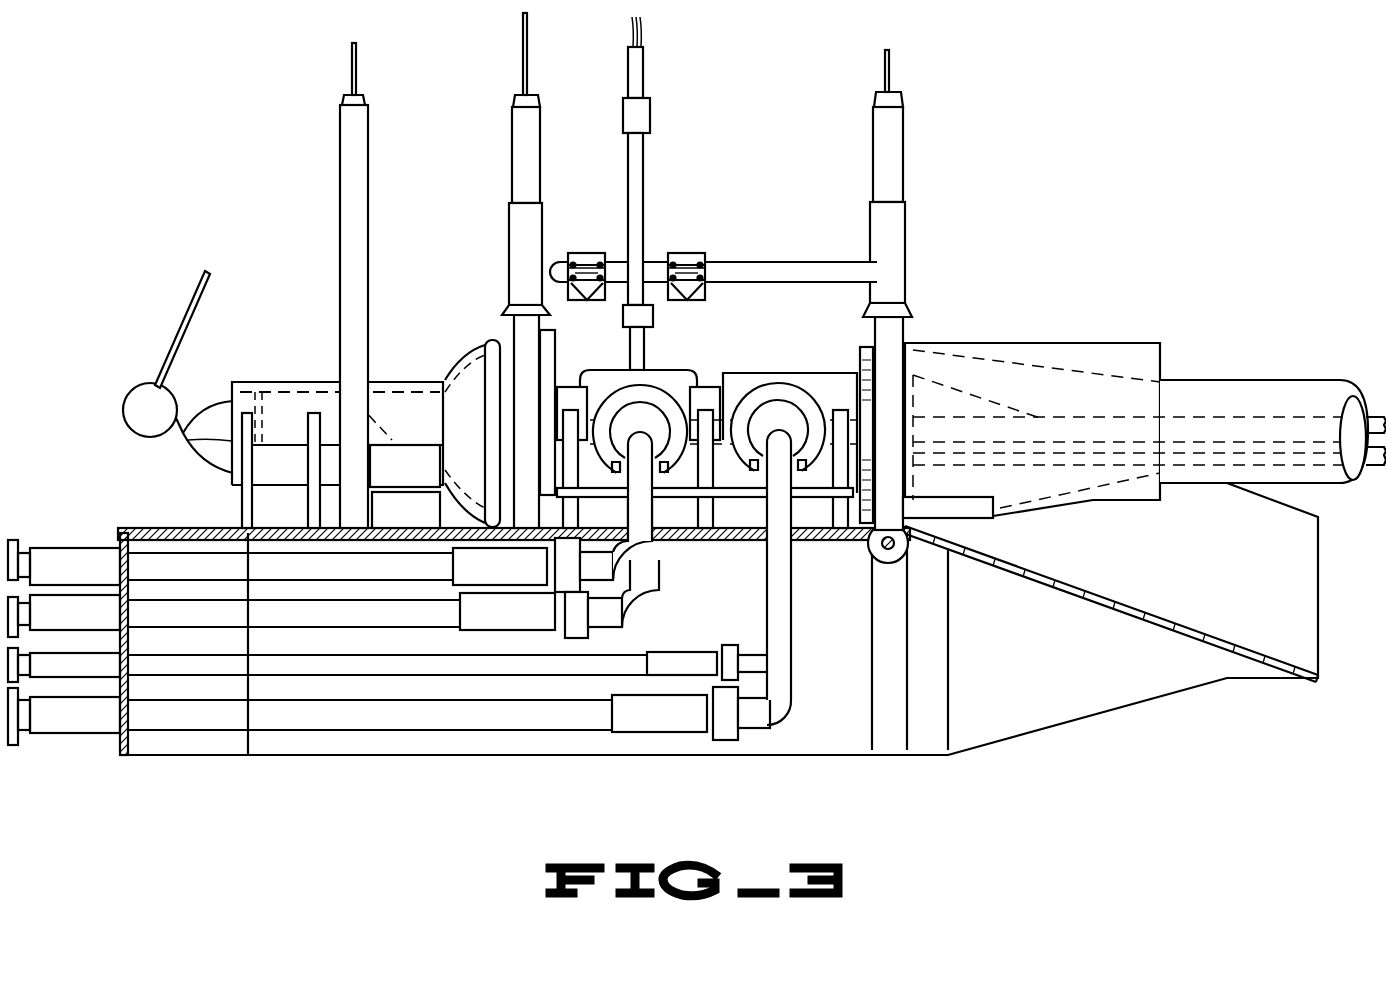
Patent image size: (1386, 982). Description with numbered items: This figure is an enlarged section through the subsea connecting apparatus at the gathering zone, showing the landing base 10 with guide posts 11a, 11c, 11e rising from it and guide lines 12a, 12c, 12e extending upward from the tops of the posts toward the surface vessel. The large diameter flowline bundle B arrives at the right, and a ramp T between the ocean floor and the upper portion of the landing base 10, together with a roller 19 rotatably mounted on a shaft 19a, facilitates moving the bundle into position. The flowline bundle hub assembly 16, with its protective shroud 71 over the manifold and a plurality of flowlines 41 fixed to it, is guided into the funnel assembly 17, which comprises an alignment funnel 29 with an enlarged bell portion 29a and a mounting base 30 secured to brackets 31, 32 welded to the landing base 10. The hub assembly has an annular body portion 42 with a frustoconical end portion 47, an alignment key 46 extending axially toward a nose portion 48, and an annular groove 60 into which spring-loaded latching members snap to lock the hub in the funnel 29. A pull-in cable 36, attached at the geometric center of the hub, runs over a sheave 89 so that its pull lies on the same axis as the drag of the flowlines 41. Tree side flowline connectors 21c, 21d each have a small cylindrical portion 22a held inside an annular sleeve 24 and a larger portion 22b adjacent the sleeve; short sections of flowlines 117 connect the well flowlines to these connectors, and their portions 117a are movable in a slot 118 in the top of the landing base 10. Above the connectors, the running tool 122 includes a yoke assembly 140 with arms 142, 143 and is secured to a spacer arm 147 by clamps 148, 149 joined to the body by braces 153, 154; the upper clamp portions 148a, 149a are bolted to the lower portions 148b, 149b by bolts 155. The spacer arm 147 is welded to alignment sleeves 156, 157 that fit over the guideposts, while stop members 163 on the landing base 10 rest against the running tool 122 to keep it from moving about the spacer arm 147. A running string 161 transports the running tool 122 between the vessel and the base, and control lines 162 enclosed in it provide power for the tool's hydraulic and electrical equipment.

The landing base 10 is at (118, 533).
The guide post 11a is at (342, 133).
The guide post 11c is at (514, 130).
The guide post 11e is at (893, 110).
The guide line 12a is at (352, 55).
The guide line 12c is at (523, 50).
The guide line 12e is at (893, 62).
The flowline bundle hub assembly 16 is at (203, 461).
The funnel assembly 17 is at (235, 499).
The roller 19 is at (886, 565).
The shaft 19a is at (880, 550).
The tree side flowline connector 21c is at (656, 378).
The tree side flowline connector 21d is at (741, 398).
The small cylindrical portion 22a is at (806, 432).
The larger portion 22b is at (797, 390).
The annular sleeve 24 is at (705, 469).
The alignment funnel 29 is at (246, 383).
The enlarged bell portion 29a is at (270, 400).
The mounting base 30 is at (412, 479).
The bracket 31 is at (248, 478).
The bracket 32 is at (436, 511).
The pull-in cable 36 is at (168, 330).
The flowlines 41 is at (1372, 426).
The annular body portion 42 is at (416, 380).
The alignment key 46 is at (285, 384).
The frustoconical end portion 47 is at (492, 348).
The nose portion 48 is at (188, 444).
The annular groove 60 is at (236, 405).
The protective shroud 71 is at (1077, 345).
The sheave 89 is at (133, 415).
The short sections of flowlines 117 is at (159, 575).
The portions adjacent the flowline connectors 117a is at (650, 578).
The slot 118 is at (762, 540).
The running tool 122 is at (727, 298).
The yoke assembly 140 is at (720, 308).
The arm 142 is at (580, 390).
The arm 143 is at (706, 388).
The spacer arm 147 is at (868, 275).
The clamp 148 is at (586, 251).
The upper portion of clamp 148a is at (568, 263).
The lower portion of clamp 148b is at (545, 274).
The clamp 149 is at (700, 250).
The upper portion of clamp 149a is at (675, 252).
The lower portion of clamp 149b is at (703, 276).
The brace 153 is at (545, 338).
The brace 154 is at (706, 378).
The bolts 155 is at (705, 268).
The alignment sleeve 156 is at (510, 213).
The alignment sleeve 157 is at (900, 213).
The running string 161 is at (648, 85).
The control lines 162 is at (645, 26).
The stop members 163 is at (856, 518).
The flowline bundle B is at (1225, 385).
The ramp T is at (1107, 598).